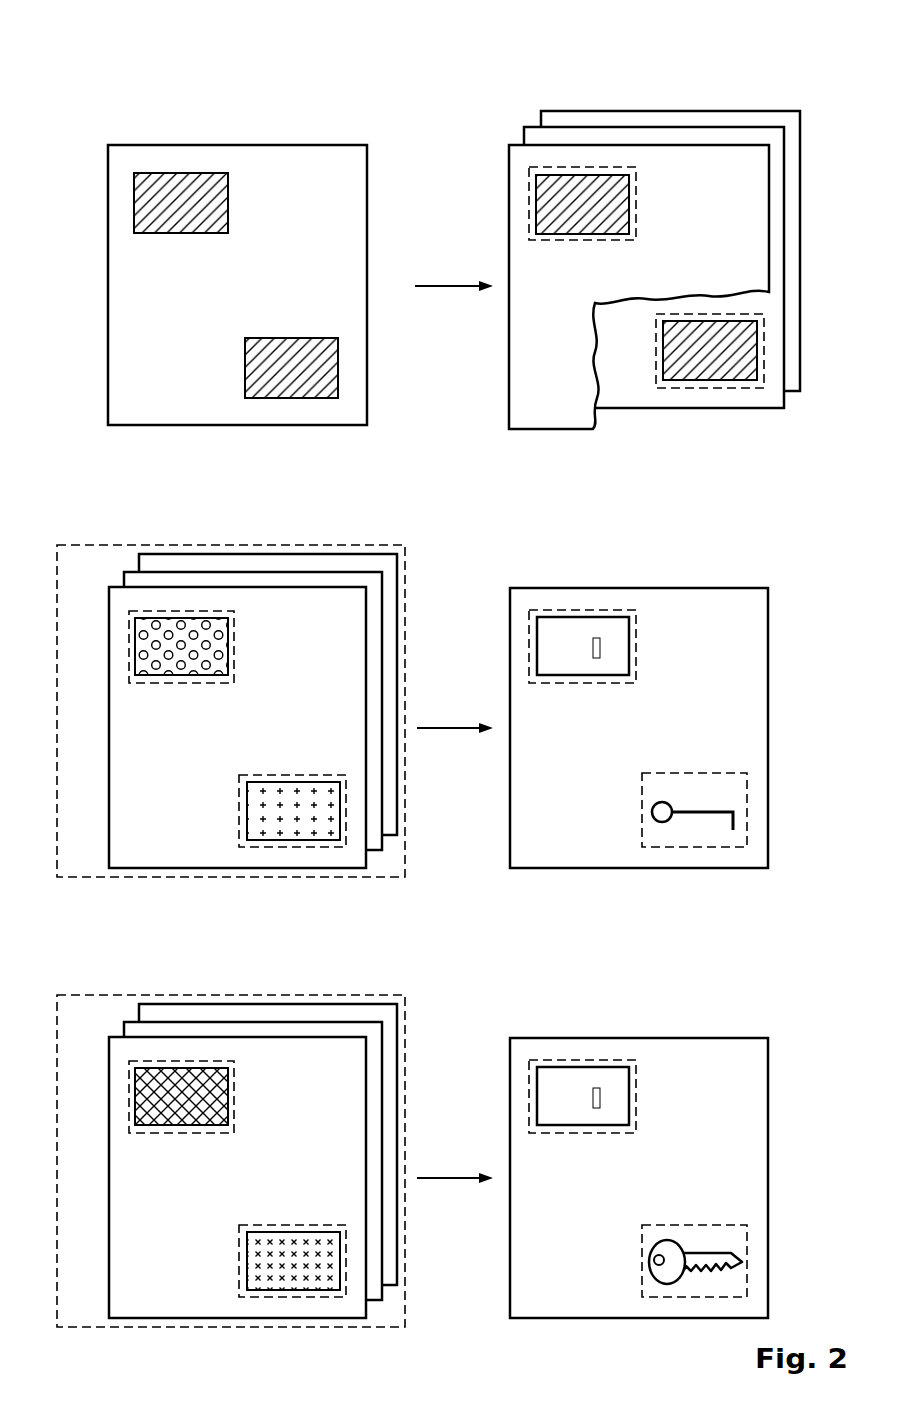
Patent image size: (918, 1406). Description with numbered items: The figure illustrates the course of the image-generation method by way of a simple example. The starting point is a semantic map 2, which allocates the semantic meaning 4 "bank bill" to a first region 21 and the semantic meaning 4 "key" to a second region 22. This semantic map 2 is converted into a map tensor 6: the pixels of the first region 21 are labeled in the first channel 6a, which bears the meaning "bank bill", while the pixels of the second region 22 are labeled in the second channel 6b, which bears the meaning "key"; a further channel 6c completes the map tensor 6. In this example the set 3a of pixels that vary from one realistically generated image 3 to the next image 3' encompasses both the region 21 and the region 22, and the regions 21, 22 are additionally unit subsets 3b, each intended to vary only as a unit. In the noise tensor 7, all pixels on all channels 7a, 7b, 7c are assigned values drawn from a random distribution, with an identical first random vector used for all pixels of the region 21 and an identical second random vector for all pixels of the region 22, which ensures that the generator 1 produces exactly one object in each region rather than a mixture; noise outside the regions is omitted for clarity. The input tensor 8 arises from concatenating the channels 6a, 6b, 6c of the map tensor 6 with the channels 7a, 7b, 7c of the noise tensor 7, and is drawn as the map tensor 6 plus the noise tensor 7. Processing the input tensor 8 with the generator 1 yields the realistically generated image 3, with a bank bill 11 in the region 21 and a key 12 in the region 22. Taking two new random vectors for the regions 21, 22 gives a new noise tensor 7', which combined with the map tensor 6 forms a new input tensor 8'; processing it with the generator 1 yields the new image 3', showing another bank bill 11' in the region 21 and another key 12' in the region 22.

The generator 1 is at (458, 728).
The semantic map 2 is at (240, 145).
The realistically generated image 3 is at (639, 695).
The new realistically generated image 3' is at (639, 1145).
The set of pixels varying from one generated image to the next 3a is at (637, 186).
The unit subsets 3b is at (446, 730).
The semantic meaning 4 is at (654, 237).
The map tensor 6 is at (433, 600).
The first channel of the map tensor 6a is at (753, 49).
The second channel of the map tensor 6b is at (665, 127).
The third channel of the map tensor 6c is at (730, 111).
The noise tensor 7 is at (253, 879).
The new noise tensor 7' is at (261, 916).
The first channel of the noise tensor 7a is at (350, 492).
The second channel of the noise tensor 7b is at (263, 572).
The third channel of the noise tensor 7c is at (329, 554).
The input tensor 8 is at (231, 879).
The new input tensor 8' is at (231, 1109).
The bank bill 11 is at (612, 646).
The another bank bill 11' is at (615, 1096).
The key 12 is at (660, 814).
The another key 12' is at (664, 1262).
The first region 21 is at (228, 203).
The second region 22 is at (245, 368).